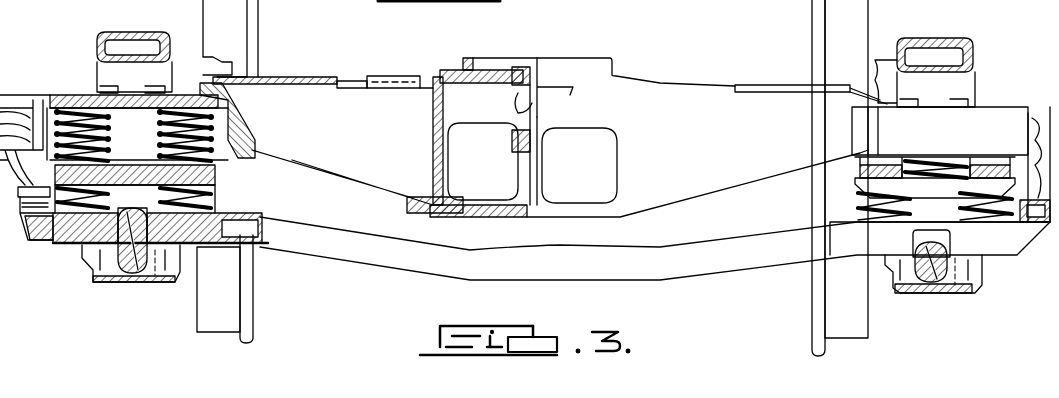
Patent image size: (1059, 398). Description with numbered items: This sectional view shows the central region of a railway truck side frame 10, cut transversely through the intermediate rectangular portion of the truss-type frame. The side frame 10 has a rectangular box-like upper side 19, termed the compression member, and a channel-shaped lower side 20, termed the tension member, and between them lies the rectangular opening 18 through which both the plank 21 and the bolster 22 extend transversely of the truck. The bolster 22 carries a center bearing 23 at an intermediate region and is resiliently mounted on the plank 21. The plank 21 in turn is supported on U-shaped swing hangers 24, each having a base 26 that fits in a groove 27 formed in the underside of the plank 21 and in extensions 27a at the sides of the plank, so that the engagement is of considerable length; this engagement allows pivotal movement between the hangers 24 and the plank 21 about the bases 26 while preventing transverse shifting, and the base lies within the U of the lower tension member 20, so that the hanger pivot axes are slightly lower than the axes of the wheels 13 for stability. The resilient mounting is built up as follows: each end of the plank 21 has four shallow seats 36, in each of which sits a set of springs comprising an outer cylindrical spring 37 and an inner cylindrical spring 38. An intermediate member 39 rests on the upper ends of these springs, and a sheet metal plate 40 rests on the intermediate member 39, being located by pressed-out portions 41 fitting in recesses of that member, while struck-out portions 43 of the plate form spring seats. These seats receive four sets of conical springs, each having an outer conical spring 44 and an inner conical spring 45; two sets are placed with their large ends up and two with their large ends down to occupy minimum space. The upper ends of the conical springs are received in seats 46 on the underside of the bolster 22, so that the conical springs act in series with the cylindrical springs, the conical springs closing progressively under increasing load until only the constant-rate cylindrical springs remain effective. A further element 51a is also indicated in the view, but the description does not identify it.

The side frame 10 is at (90, 35).
The wheel 13 is at (850, 20).
The rectangular opening 18 is at (100, 68).
The upper side of side frame 19 is at (135, 32).
The lower side of intermediate portion 20 is at (977, 293).
The plank 21 is at (657, 275).
The bolster 22 is at (660, 83).
The center bearing 23 is at (598, 62).
The swing hanger 24 is at (127, 272).
The base of swing hanger 26 is at (133, 280).
The groove 27 is at (118, 256).
The extension 27a is at (950, 243).
The seat 36 is at (152, 283).
The outer cylindrical spring 37 is at (243, 212).
The inner cylindrical spring 38 is at (210, 194).
The intermediate member 39 is at (218, 174).
The sheet metal plate 40 is at (241, 120).
The pressed-out portion 41 is at (226, 145).
The struck-out portion 43 is at (108, 146).
The outer conical spring 44 is at (232, 114).
The inner conical spring 45 is at (230, 119).
The seat 46 is at (142, 108).
The sloping strut 51a is at (335, 215).